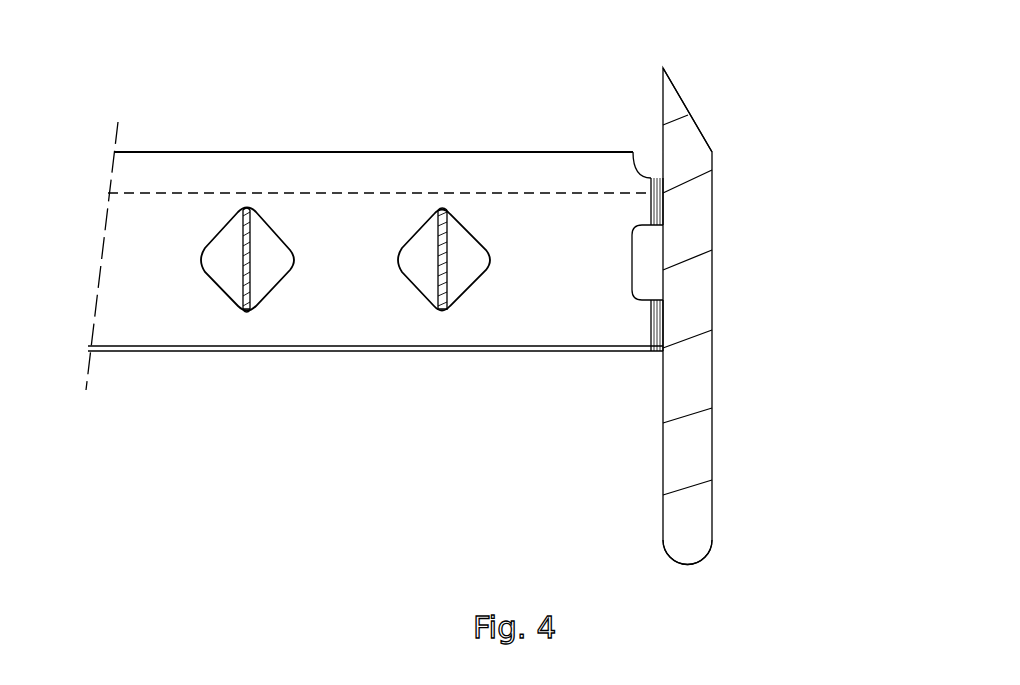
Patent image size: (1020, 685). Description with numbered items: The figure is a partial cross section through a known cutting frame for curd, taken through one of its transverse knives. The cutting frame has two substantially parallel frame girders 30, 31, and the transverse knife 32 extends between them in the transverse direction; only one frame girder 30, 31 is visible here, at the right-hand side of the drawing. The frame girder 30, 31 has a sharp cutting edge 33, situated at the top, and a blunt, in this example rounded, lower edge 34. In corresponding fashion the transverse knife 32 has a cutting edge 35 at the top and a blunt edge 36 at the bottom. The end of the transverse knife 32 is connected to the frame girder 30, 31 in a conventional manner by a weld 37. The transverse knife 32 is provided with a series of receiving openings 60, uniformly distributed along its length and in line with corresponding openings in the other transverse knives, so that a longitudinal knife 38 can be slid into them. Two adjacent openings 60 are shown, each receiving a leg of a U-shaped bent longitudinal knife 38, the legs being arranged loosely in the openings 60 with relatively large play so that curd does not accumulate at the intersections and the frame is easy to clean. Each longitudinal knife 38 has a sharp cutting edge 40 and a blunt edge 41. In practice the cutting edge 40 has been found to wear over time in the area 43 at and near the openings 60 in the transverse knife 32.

The frame girder 30 is at (697, 316).
The frame girder 31 is at (687, 305).
The transverse knife 32 is at (550, 317).
The sharp cutting edge 33 is at (663, 68).
The lower edge 34 is at (697, 563).
The cutting edge 35 is at (318, 152).
The blunt edge 36 is at (348, 351).
The weld 37 is at (658, 355).
The longitudinal knife 38 is at (250, 247).
The sharp cutting edge 40 is at (242, 210).
The blunt edge 41 is at (243, 312).
The area 43 is at (440, 210).
The opening 60 is at (220, 293).